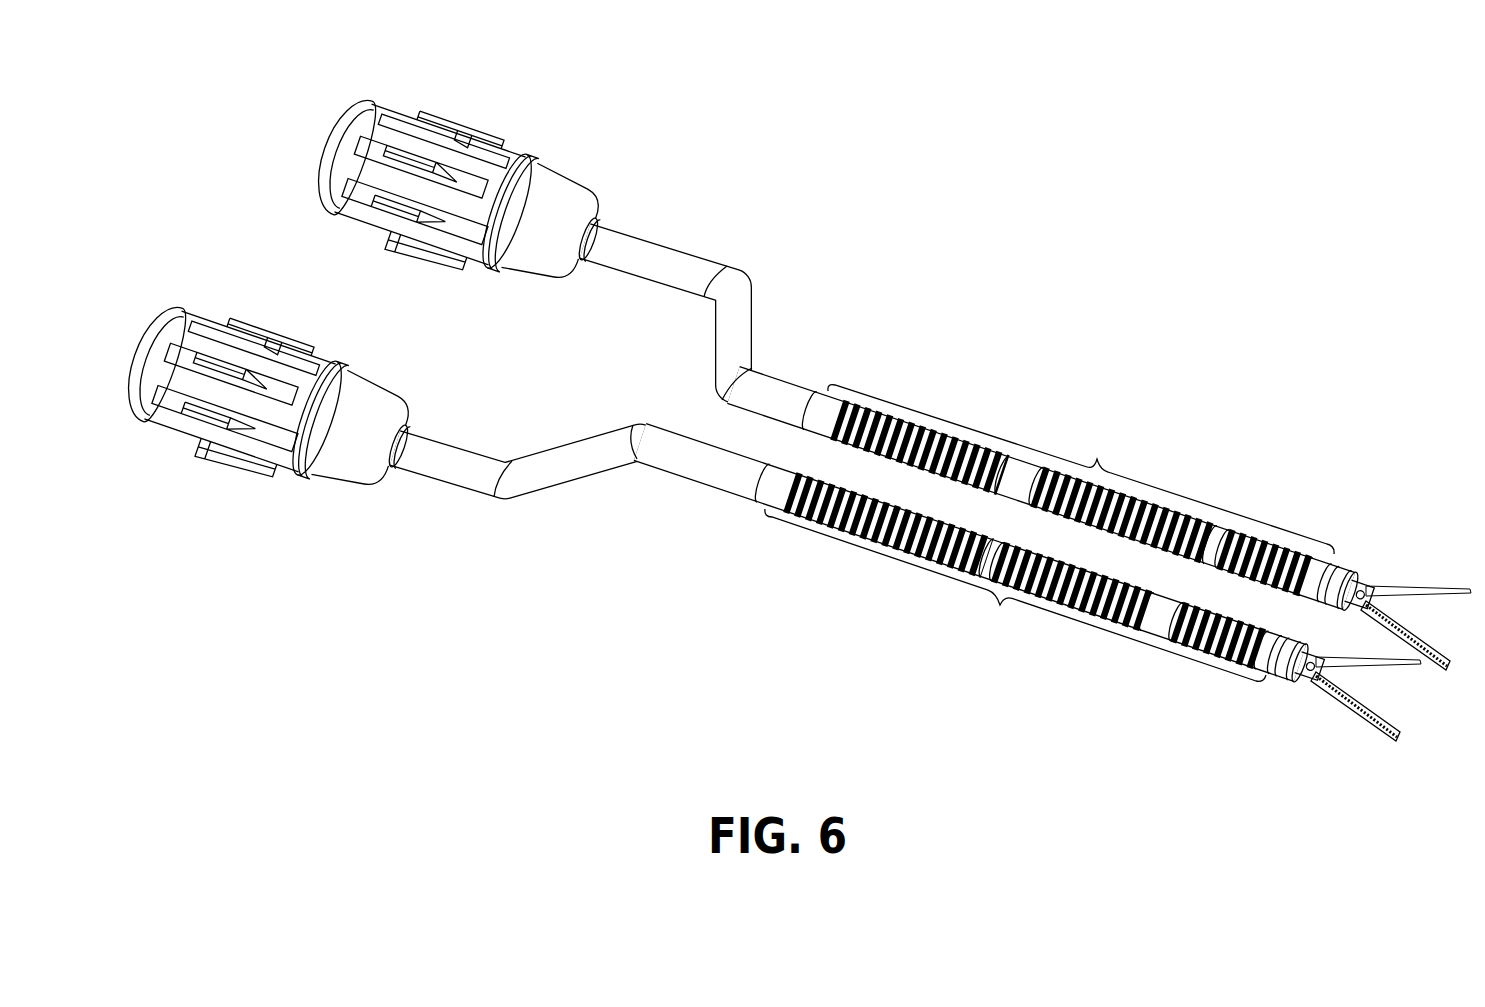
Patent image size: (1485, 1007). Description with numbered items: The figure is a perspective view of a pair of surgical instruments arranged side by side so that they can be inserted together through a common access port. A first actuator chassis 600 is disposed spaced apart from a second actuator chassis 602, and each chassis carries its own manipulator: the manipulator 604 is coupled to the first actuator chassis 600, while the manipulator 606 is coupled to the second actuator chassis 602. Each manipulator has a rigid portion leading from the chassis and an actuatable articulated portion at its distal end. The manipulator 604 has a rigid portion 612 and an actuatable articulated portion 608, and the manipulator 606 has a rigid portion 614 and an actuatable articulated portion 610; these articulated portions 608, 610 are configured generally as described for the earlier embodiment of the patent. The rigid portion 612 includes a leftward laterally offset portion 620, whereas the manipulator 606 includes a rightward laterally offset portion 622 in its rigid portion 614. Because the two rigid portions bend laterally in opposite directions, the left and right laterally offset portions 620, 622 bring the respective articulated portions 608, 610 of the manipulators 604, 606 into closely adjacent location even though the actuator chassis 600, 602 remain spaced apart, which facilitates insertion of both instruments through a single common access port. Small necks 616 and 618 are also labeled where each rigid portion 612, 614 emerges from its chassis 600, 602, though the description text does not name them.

The first actuator chassis 600 is at (284, 393).
The second actuator chassis 602 is at (498, 196).
The manipulator 604 is at (783, 663).
The manipulator 606 is at (987, 287).
The actuatable articulated portion 608 is at (1015, 595).
The actuatable articulated portion 610 is at (1081, 469).
The rigid portion 612 is at (481, 512).
The rigid portion 614 is at (735, 257).
The first strain relief neck 616 is at (406, 448).
The second strain relief neck 618 is at (595, 238).
The leftward laterally offset portion 620 is at (562, 442).
The rightward laterally offset portion 622 is at (717, 350).